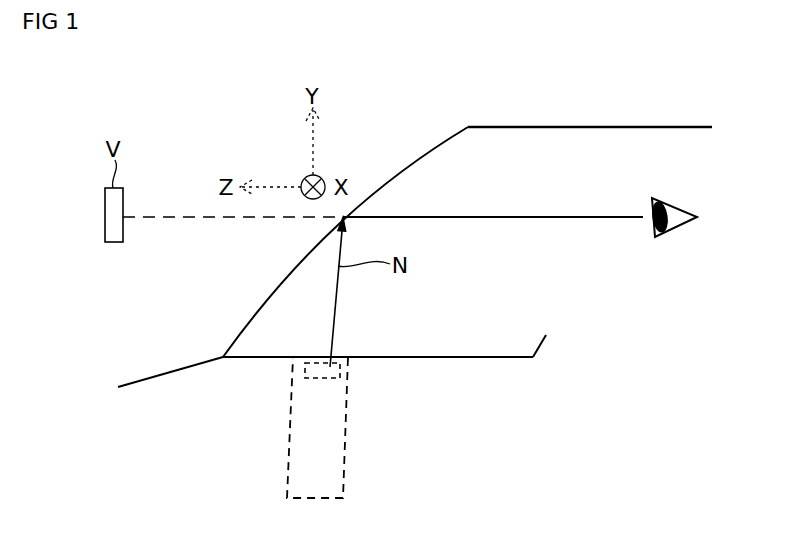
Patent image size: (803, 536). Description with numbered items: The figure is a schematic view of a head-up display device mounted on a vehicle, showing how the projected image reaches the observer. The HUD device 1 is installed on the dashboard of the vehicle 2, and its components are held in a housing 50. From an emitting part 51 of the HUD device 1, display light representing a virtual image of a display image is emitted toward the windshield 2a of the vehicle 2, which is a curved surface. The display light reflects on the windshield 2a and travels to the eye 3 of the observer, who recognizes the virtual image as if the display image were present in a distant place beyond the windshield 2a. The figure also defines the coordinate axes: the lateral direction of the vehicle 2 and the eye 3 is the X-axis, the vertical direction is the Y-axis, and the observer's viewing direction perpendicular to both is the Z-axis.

The HUD device 1 is at (372, 485).
The vehicle 2 is at (568, 97).
The windshield 2a is at (450, 135).
The eye 3 is at (692, 210).
The housing 50 is at (348, 393).
The emitting part 51 is at (292, 388).